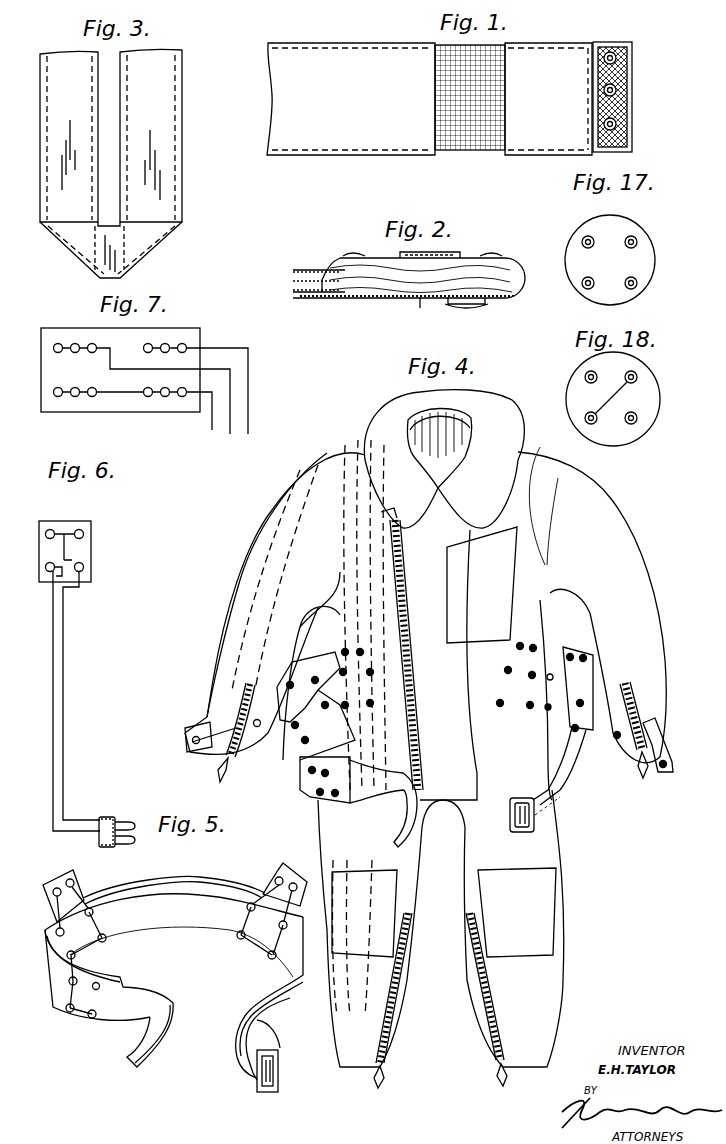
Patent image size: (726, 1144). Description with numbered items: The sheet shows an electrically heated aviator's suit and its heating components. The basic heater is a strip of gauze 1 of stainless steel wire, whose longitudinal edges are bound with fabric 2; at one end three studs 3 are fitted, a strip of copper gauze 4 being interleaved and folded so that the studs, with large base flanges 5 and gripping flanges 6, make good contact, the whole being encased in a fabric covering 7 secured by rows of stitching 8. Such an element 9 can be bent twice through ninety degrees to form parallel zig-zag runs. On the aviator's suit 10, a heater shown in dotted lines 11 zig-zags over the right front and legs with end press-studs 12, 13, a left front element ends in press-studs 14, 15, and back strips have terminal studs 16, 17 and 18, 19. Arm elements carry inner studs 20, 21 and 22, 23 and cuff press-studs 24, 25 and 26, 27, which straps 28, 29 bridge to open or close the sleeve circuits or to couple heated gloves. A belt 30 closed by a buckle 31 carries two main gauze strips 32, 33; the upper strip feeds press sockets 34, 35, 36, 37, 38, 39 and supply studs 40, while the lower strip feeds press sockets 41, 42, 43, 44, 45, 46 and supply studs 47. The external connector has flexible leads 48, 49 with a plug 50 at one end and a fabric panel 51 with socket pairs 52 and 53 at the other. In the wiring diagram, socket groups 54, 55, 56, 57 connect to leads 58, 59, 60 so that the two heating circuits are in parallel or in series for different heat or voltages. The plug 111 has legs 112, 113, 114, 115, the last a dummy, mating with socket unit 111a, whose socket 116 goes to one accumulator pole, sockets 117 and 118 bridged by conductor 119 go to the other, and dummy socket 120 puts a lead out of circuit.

In FIG. 1, the strip of gauze 1 is at (482, 80).
In FIG. 2, the strip of gauze 1 is at (300, 278).
In FIG. 1, the fabric binding 2 is at (470, 152).
In FIG. 1, the press-stud connectors 3 is at (618, 125).
In FIG. 2, the press-stud connectors 3 is at (468, 307).
In FIG. 1, the strip of copper gauze 4 is at (624, 72).
In FIG. 2, the strip of copper gauze 4 is at (375, 296).
In FIG. 2, the base flanges 5 is at (455, 254).
In FIG. 2, the flanges 6 is at (418, 300).
In FIG. 1, the fabric covering 7 is at (322, 75).
In FIG. 1, the rows of stitching 8 is at (393, 150).
In FIG. 3, the element 9 is at (158, 93).
In FIG. 4, the aviator's suit 10 is at (372, 1040).
In FIG. 4, the dotted lines 11 is at (345, 1010).
In FIG. 4, the press-stud 12 is at (408, 670).
In FIG. 4, the press-stud 13 is at (372, 706).
In FIG. 4, the press-stud 14 is at (507, 673).
In FIG. 4, the press-stud 15 is at (501, 707).
In FIG. 4, the terminal stud 16 is at (346, 675).
In FIG. 4, the terminal stud 17 is at (348, 708).
In FIG. 4, the terminal stud 18 is at (531, 679).
In FIG. 4, the terminal stud 19 is at (530, 709).
In FIG. 4, the stud 20 is at (343, 652).
In FIG. 4, the stud 21 is at (364, 652).
In FIG. 4, the stud 22 is at (535, 645).
In FIG. 4, the stud 23 is at (538, 645).
In FIG. 4, the press-stud 24 is at (238, 700).
In FIG. 4, the press-stud 25 is at (257, 727).
In FIG. 4, the press-stud 26 is at (614, 738).
In FIG. 4, the press-stud 27 is at (645, 732).
In FIG. 4, the bridge strap 28 is at (195, 752).
In FIG. 4, the bridge strap 29 is at (664, 770).
In FIG. 5, the belt 30 is at (266, 1005).
In FIG. 4, the belt 30 is at (553, 785).
In FIG. 5, the buckle 31 is at (257, 1084).
In FIG. 4, the buckle 31 is at (530, 825).
In FIG. 5, the upper main gauze strip 32 is at (186, 893).
In FIG. 5, the lower main gauze strip 33 is at (130, 930).
In FIG. 5, the press socket 34 is at (57, 931).
In FIG. 5, the press socket 35 is at (92, 909).
In FIG. 5, the press socket 36 is at (249, 903).
In FIG. 5, the press socket 37 is at (285, 929).
In FIG. 5, the press socket 38 is at (56, 888).
In FIG. 5, the press socket 39 is at (276, 879).
In FIG. 5, the studs 40 is at (55, 1026).
In FIG. 5, the press socket 41 is at (75, 957).
In FIG. 5, the press socket 42 is at (105, 941).
In FIG. 5, the press socket 43 is at (238, 938).
In FIG. 5, the press socket 44 is at (269, 958).
In FIG. 5, the press socket 45 is at (74, 882).
In FIG. 5, the press socket 46 is at (290, 884).
In FIG. 5, the studs 47 is at (92, 1018).
In FIG. 6, the flexible lead 48 is at (53, 781).
In FIG. 6, the flexible lead 49 is at (63, 795).
In FIG. 6, the plug 50 is at (107, 820).
In FIG. 6, the fabric panel 51 is at (50, 528).
In FIG. 6, the sockets 52 is at (79, 529).
In FIG. 6, the sockets 53 is at (40, 592).
In FIG. 7, the group of sockets 54 is at (92, 343).
In FIG. 7, the sockets 55 is at (92, 396).
In FIG. 7, the sockets 56 is at (182, 343).
In FIG. 7, the sockets 57 is at (182, 396).
In FIG. 7, the lead 58 is at (230, 434).
In FIG. 7, the lead 59 is at (212, 430).
In FIG. 7, the lead 60 is at (248, 415).
In FIG. 17, the plug 111 is at (652, 292).
In FIG. 17, the leg 112 is at (585, 238).
In FIG. 17, the leg 113 is at (634, 238).
In FIG. 17, the leg 114 is at (634, 288).
In FIG. 17, the leg 115 is at (584, 288).
In FIG. 18, the socket unit 111a is at (605, 446).
In FIG. 18, the socket 116 is at (588, 373).
In FIG. 18, the socket 117 is at (634, 373).
In FIG. 18, the socket 118 is at (586, 418).
In FIG. 18, the conductor 119 is at (612, 394).
In FIG. 18, the dummy socket 120 is at (635, 422).